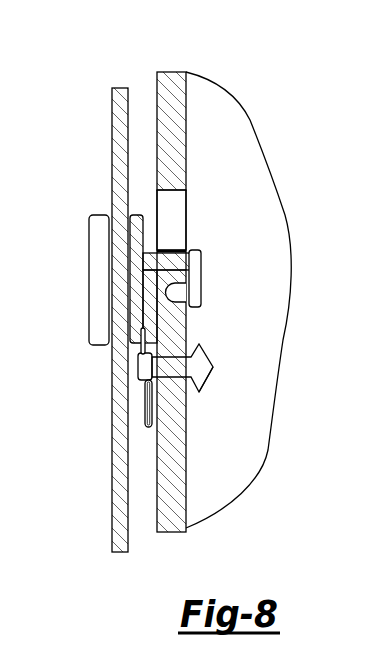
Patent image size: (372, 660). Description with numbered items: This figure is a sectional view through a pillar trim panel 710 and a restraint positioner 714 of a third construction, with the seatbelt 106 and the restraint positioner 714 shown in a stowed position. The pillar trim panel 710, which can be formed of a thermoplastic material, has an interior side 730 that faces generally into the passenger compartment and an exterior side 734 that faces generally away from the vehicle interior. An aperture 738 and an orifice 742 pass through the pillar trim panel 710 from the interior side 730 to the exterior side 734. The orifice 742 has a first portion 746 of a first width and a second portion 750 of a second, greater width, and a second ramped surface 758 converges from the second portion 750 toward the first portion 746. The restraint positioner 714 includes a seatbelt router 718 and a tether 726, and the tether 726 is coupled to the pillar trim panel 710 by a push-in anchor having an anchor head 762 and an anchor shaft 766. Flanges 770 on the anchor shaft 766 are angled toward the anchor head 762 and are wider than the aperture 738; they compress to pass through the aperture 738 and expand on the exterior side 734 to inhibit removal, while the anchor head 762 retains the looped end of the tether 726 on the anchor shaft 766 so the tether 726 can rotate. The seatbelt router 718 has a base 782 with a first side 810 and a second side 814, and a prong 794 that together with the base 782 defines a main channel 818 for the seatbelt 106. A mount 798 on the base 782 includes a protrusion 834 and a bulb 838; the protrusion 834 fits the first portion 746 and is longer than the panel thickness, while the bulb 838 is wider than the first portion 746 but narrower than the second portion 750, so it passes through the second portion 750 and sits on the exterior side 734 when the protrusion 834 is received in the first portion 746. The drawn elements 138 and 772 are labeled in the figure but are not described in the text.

The seatbelt 106 is at (100, 538).
The floor panel 138 is at (112, 500).
The pillar trim panel 710 is at (170, 83).
The restraint positioner 714 is at (98, 158).
The seatbelt router 718 is at (92, 216).
The tether 726 is at (150, 427).
The interior side 730 is at (156, 97).
The exterior side 734 is at (188, 105).
The aperture 738 is at (162, 378).
The orifice 742 is at (165, 188).
The first portion 746 is at (170, 295).
The second portion 750 is at (176, 203).
The second ramped surface 758 is at (168, 260).
The anchor head 762 is at (138, 372).
The anchor shaft 766 is at (172, 362).
The flanges 770 is at (215, 355).
The direction arrow head 772 is at (215, 382).
The base 782 is at (132, 214).
The prong 794 is at (100, 292).
The mount 798 is at (192, 248).
The first side 810 is at (126, 328).
The second side 814 is at (158, 222).
The main channel 818 is at (126, 237).
The protrusion 834 is at (140, 287).
The bulb 838 is at (196, 306).